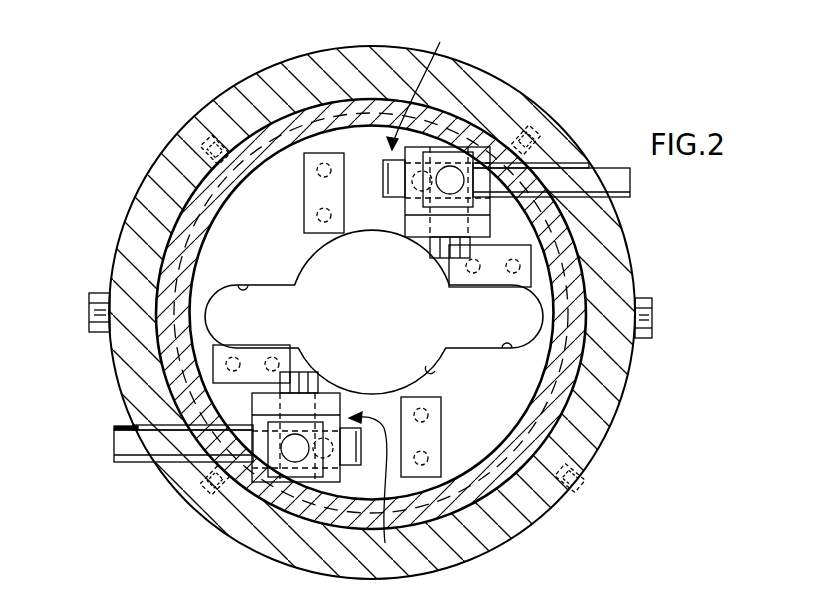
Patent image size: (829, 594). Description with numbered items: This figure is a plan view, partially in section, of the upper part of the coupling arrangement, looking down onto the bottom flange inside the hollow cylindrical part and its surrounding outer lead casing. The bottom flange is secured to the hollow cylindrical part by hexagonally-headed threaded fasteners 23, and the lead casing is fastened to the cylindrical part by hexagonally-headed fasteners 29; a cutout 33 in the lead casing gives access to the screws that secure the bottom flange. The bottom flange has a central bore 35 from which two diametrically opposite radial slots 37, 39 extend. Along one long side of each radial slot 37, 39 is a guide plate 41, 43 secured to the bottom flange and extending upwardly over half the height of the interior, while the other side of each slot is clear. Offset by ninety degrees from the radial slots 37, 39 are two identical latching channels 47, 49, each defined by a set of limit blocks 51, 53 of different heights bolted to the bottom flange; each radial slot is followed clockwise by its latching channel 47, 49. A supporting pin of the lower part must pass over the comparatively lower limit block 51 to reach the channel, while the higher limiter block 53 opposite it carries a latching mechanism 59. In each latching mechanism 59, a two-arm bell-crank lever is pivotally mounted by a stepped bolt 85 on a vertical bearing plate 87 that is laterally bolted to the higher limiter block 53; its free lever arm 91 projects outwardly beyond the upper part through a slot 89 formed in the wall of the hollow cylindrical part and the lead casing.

The hexagonally-headed threaded fasteners 23 is at (213, 130).
The hexagonally-headed fasteners 29 is at (92, 305).
The cutout 33 is at (222, 520).
The central bore 35 is at (440, 366).
The radial slot 37 is at (241, 284).
The radial slot 39 is at (553, 366).
The guide plate 41 is at (213, 356).
The guide plate 43 is at (540, 248).
The latching channel 47 is at (358, 170).
The latching channel 49 is at (380, 458).
The lower limit block 51 is at (308, 185).
The higher limiter block 53 is at (414, 143).
The latching mechanism 59 is at (400, 293).
The stepped bolt 85 is at (252, 425).
The vertical bearing plate 87 is at (250, 398).
The slot 89 is at (135, 427).
The free lever arm 91 is at (597, 172).